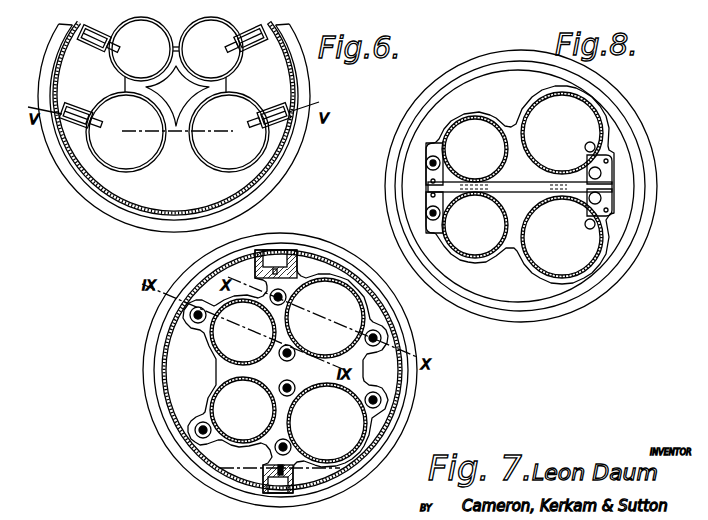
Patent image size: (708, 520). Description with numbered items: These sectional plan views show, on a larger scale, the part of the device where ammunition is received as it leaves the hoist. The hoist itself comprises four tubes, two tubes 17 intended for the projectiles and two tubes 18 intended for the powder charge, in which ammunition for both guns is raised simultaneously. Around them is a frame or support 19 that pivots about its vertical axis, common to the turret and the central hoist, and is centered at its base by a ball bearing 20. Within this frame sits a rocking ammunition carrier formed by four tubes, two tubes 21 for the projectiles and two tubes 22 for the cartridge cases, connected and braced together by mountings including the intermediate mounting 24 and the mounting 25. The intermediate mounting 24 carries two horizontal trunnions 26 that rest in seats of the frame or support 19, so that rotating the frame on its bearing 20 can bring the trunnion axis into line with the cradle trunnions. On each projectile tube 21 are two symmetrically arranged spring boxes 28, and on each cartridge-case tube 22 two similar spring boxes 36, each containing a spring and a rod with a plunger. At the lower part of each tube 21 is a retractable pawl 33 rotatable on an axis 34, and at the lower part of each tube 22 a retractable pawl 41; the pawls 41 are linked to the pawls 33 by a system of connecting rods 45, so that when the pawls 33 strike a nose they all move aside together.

In FIG. 6, the tube 17 is at (102, 46).
In FIG. 6, the tube 18 is at (149, 168).
In FIG. 6, the frame or support 19 is at (101, 192).
In FIG. 7, the frame or support 19 is at (335, 260).
In FIG. 8, the frame or support 19 is at (568, 298).
In FIG. 6, the ball bearing 20 is at (283, 167).
In FIG. 7, the ball bearing 20 is at (151, 393).
In FIG. 8, the ball bearing 20 is at (605, 286).
In FIG. 7, the tube 21 is at (218, 347).
In FIG. 8, the tube 21 is at (469, 121).
In FIG. 7, the tube 22 is at (367, 318).
In FIG. 8, the tube 22 is at (531, 110).
In FIG. 7, the intermediate mounting 24 is at (228, 300).
In FIG. 8, the mounting 25 is at (470, 116).
In FIG. 7, the horizontal trunnion 26 is at (273, 273).
In FIG. 7, the spring box 28 is at (190, 314).
In FIG. 8, the retractable pawl 33 is at (438, 142).
In FIG. 8, the axis 34 is at (428, 203).
In FIG. 7, the spring box 36 is at (381, 338).
In FIG. 8, the retractable pawl 41 is at (605, 153).
In FIG. 8, the connecting rods 45 is at (518, 183).